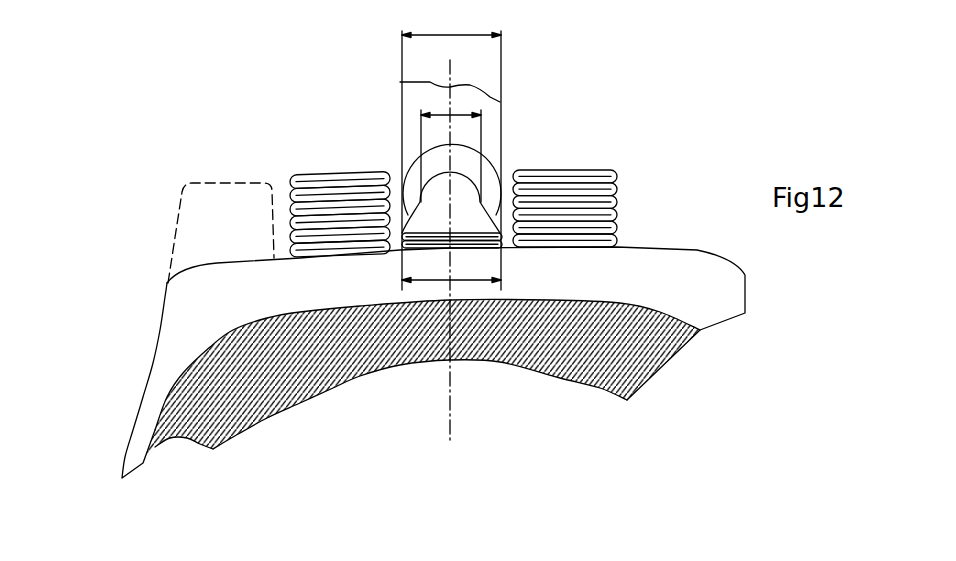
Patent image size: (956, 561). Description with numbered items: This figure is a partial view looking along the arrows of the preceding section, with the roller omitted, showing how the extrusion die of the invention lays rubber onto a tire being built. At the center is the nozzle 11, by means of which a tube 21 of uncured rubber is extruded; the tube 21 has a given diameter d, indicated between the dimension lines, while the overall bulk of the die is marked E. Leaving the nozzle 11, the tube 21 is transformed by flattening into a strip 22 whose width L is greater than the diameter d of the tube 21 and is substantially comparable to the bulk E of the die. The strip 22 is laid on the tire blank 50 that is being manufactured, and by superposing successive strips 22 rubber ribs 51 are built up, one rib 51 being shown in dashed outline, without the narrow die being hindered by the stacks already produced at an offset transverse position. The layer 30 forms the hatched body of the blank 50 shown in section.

The nozzle 11 is at (485, 175).
The tube 21 is at (428, 219).
The strip 22 is at (590, 174).
The tire carcass / reinforcement layer 30 is at (600, 343).
The tire blank 50 is at (130, 328).
The rubber ribs 51 is at (313, 175).